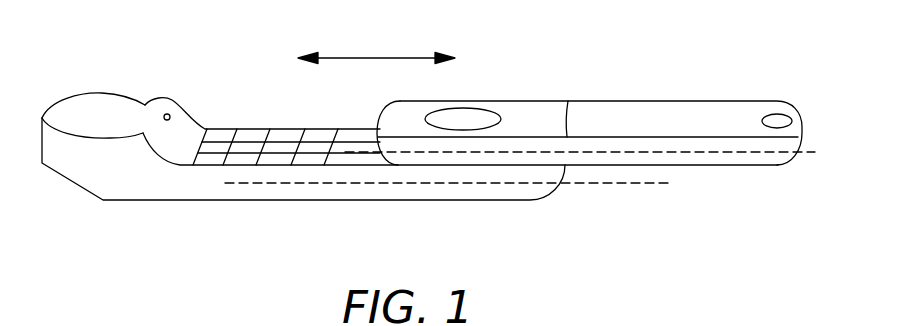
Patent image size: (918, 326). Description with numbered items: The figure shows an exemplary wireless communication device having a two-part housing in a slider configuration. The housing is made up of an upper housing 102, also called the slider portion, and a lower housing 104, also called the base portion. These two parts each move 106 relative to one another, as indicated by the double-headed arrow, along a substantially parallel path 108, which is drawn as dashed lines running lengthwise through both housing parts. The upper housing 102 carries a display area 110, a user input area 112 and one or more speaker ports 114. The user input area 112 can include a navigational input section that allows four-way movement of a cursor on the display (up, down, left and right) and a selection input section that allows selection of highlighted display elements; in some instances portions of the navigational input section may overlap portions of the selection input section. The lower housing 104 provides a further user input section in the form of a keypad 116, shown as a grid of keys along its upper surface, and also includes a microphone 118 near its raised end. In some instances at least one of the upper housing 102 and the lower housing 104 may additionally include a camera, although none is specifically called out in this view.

The upper housing 102 is at (548, 107).
The lower housing 104 is at (75, 173).
The movement 106 is at (378, 55).
The substantially parallel path 108 is at (715, 155).
The display area 110 is at (639, 108).
The user input area 112 is at (479, 115).
The speaker port 114 is at (778, 115).
The keypad 116 is at (268, 140).
The microphone 118 is at (167, 114).